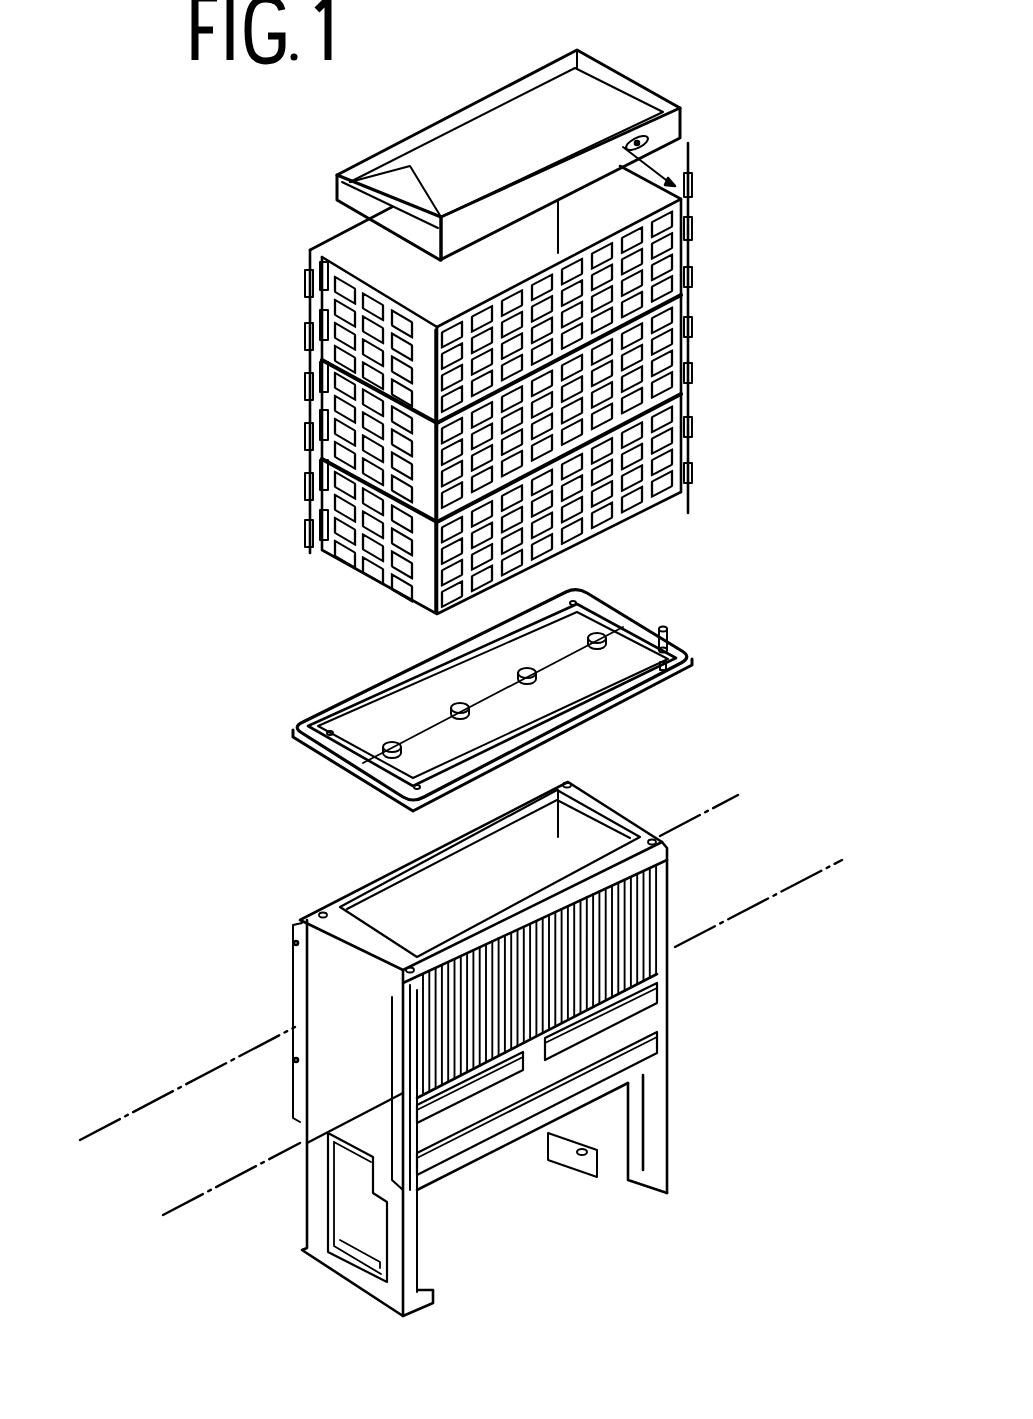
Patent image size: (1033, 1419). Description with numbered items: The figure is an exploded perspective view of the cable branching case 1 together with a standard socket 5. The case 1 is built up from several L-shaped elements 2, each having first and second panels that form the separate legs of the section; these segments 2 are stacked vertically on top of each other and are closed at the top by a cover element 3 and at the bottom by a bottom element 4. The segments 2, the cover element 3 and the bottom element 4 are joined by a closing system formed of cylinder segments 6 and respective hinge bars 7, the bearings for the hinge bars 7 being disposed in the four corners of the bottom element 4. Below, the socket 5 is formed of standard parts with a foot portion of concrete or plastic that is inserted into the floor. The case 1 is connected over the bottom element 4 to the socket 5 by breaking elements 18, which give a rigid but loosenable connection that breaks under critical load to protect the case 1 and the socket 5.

The cable branching case 1 is at (526, 665).
The L-shaped element 2 is at (330, 508).
The cover element 3 is at (590, 108).
The bottom element 4 is at (393, 718).
The socket 5 is at (320, 993).
The cylinder segment 6 is at (305, 283).
The hinge bar 7 is at (690, 180).
The breaking element 18 is at (672, 633).